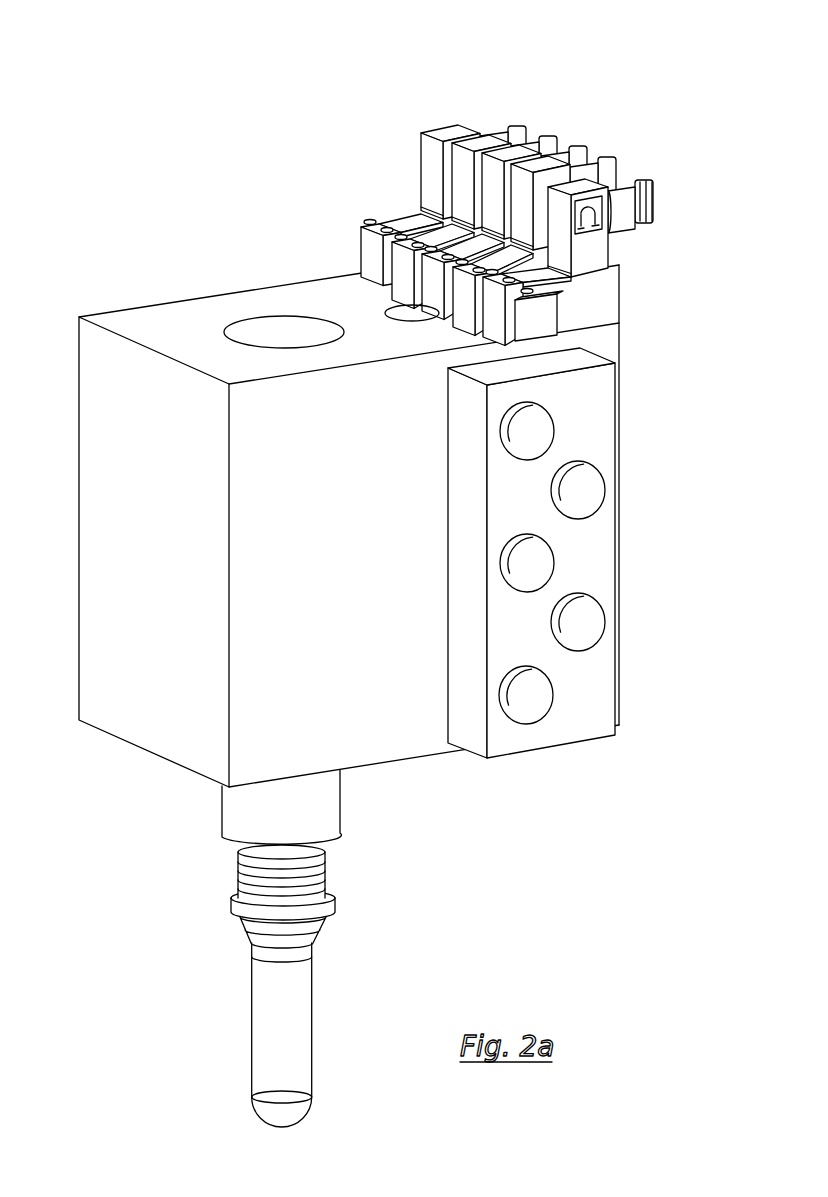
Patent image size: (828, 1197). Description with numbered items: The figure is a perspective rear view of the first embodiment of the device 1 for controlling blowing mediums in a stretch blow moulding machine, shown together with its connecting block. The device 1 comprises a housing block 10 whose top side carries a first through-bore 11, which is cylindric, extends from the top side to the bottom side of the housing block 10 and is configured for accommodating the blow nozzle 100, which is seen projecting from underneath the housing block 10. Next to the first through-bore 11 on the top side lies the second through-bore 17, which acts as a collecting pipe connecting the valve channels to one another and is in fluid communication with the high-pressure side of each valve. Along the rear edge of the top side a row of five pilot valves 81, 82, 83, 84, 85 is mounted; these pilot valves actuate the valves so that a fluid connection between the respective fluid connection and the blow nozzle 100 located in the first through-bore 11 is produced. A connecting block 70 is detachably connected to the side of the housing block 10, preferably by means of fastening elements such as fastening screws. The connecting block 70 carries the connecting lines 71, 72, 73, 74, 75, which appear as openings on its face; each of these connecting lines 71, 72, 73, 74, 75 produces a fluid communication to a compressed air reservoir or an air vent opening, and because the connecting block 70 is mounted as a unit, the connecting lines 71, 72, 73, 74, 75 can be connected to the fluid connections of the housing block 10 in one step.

The device 1 is at (37, 35).
The housing block 10 is at (153, 248).
The first through-bore 11 is at (273, 316).
The second through-bore 17 is at (392, 306).
The connecting block 70 is at (602, 675).
The connecting line 71 is at (545, 712).
The connecting line 72 is at (598, 637).
The connecting line 73 is at (552, 562).
The connecting line 74 is at (595, 507).
The connecting line 75 is at (547, 440).
The pilot valve 81 is at (557, 210).
The pilot valve 82 is at (523, 192).
The pilot valve 83 is at (495, 180).
The pilot valve 84 is at (460, 160).
The pilot valve 85 is at (433, 148).
The blow nozzle 100 is at (183, 842).